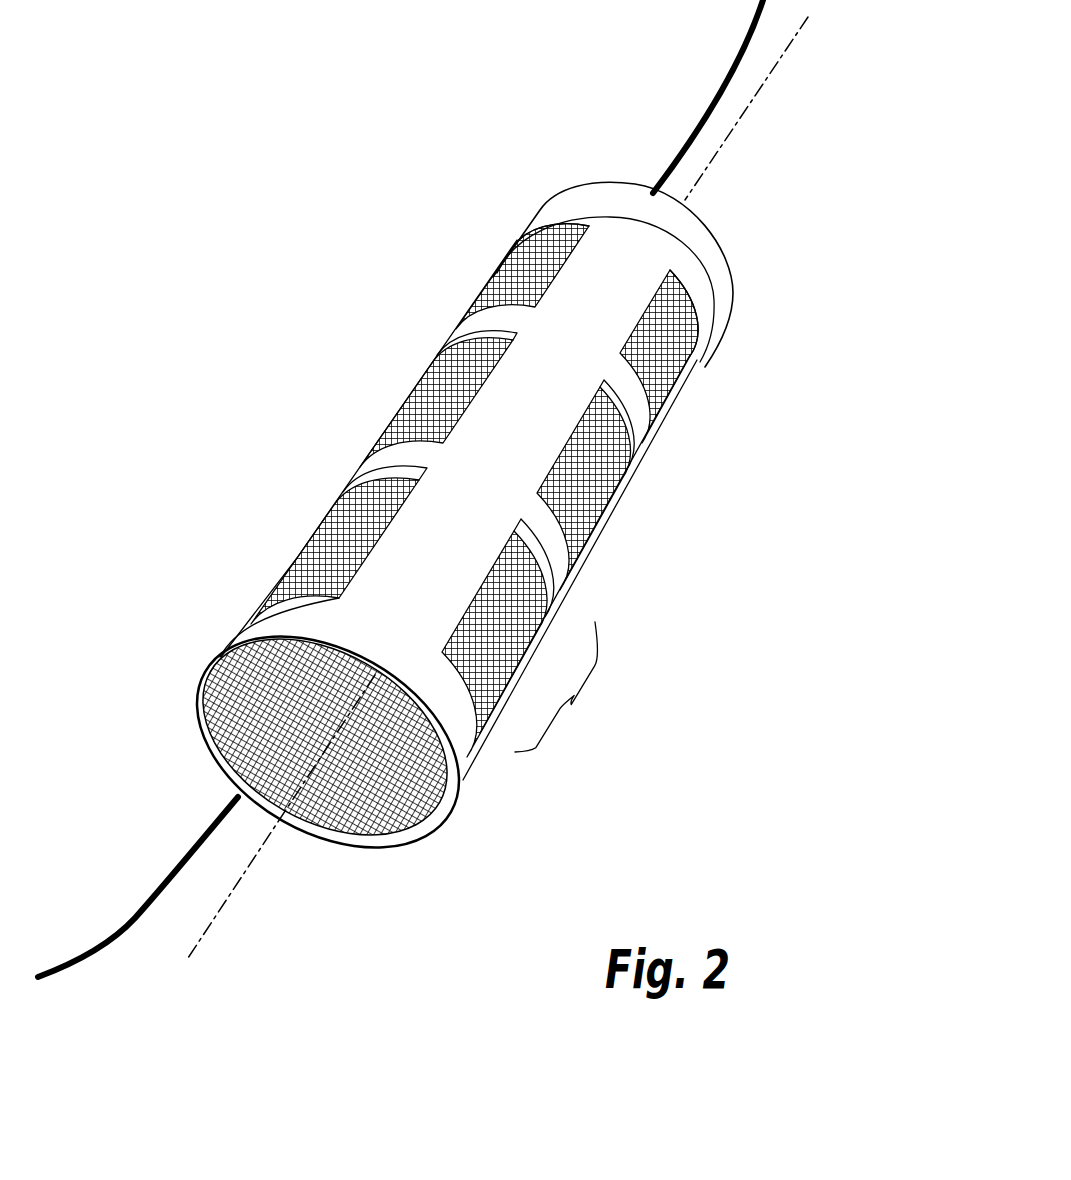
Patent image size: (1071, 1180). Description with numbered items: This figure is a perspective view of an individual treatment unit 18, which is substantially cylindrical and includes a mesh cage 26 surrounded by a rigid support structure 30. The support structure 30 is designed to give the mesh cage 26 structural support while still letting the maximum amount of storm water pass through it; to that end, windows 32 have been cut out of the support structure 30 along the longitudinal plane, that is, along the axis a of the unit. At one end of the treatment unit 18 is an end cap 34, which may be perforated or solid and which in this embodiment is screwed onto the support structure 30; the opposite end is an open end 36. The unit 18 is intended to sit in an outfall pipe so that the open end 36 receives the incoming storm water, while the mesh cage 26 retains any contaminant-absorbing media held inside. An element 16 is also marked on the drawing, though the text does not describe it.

The individual treatment unit 18 is at (158, 89).
The guidewire 16 is at (667, 155).
The mesh cage 26 is at (417, 408).
The rigid support structure 30 is at (460, 332).
The windows 32 is at (574, 687).
The end cap 34 is at (540, 207).
The open end 36 is at (195, 793).
The axis a is at (217, 913).